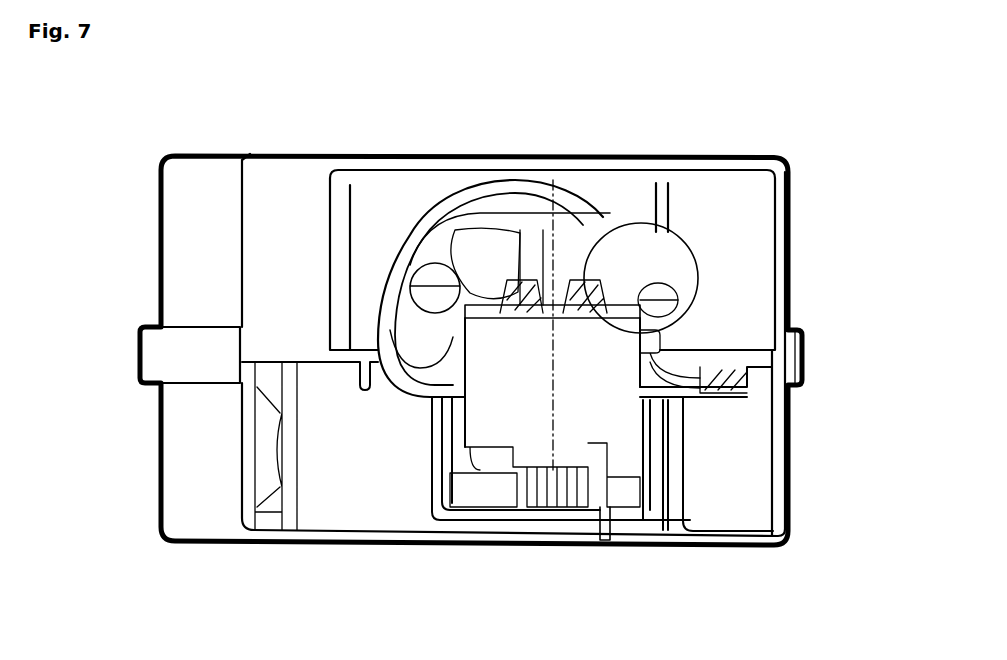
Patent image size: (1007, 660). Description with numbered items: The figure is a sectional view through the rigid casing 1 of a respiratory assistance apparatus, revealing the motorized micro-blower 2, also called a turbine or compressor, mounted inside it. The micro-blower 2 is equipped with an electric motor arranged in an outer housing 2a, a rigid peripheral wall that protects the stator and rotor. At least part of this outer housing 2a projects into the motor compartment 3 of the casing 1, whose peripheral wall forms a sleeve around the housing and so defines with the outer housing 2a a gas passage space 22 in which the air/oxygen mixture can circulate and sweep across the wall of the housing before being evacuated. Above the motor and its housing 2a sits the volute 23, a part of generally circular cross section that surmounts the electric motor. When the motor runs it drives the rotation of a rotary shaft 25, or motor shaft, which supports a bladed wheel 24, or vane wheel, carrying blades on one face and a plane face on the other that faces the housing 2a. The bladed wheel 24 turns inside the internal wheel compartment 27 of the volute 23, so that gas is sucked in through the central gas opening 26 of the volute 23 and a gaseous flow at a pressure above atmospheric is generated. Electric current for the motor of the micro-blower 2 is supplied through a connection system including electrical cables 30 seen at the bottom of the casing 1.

The rigid casing 1 is at (673, 142).
The motorized micro-blower 2 is at (680, 390).
The outer housing 2a is at (600, 367).
The motor compartment 3 is at (502, 463).
The gas passage space 22 is at (690, 535).
The volute 23 is at (627, 243).
The bladed wheel 24 is at (487, 293).
The rotary shaft 25 is at (508, 185).
The central gas opening 26 is at (543, 250).
The internal wheel compartment 27 is at (576, 248).
The electrical cables 30 is at (604, 540).